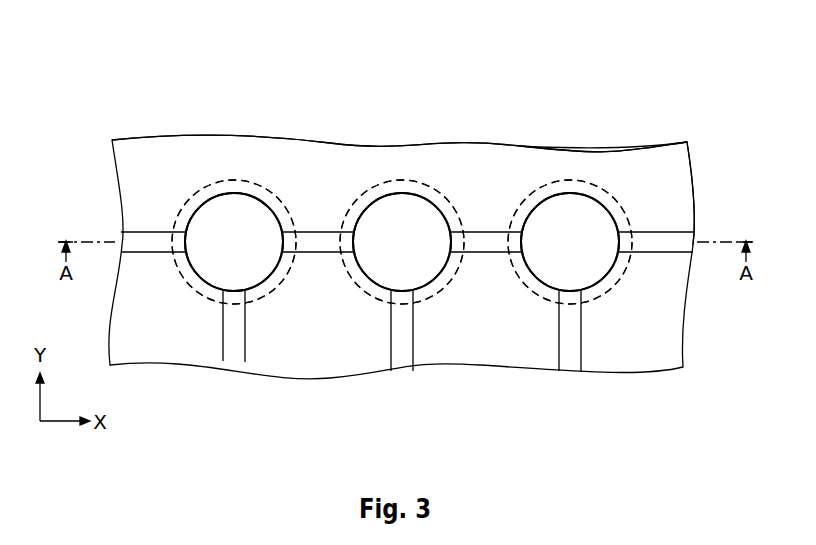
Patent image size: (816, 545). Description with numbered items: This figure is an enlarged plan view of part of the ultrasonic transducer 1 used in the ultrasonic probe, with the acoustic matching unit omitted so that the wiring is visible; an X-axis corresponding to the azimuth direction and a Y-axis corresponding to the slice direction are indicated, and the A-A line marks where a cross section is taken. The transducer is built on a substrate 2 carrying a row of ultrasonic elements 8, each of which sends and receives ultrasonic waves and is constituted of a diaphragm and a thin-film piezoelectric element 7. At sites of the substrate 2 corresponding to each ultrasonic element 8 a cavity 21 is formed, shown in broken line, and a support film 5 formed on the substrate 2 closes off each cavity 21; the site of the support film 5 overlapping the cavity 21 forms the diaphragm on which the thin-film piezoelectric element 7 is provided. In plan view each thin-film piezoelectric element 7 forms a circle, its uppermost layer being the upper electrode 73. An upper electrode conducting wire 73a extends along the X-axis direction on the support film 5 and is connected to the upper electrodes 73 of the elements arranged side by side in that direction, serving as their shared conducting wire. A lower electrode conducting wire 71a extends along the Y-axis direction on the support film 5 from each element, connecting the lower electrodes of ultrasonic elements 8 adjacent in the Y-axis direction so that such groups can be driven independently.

The ultrasonic transducer 1 is at (670, 58).
The substrate 2 is at (683, 313).
The support film 5 is at (667, 160).
The thin-film piezoelectric element 7 is at (259, 220).
The ultrasonic element 8 is at (237, 174).
The cavity 21 is at (195, 297).
The lower electrode conducting wire 71a is at (235, 350).
The upper electrode 73 is at (208, 220).
The upper electrode conducting wire 73a is at (150, 243).